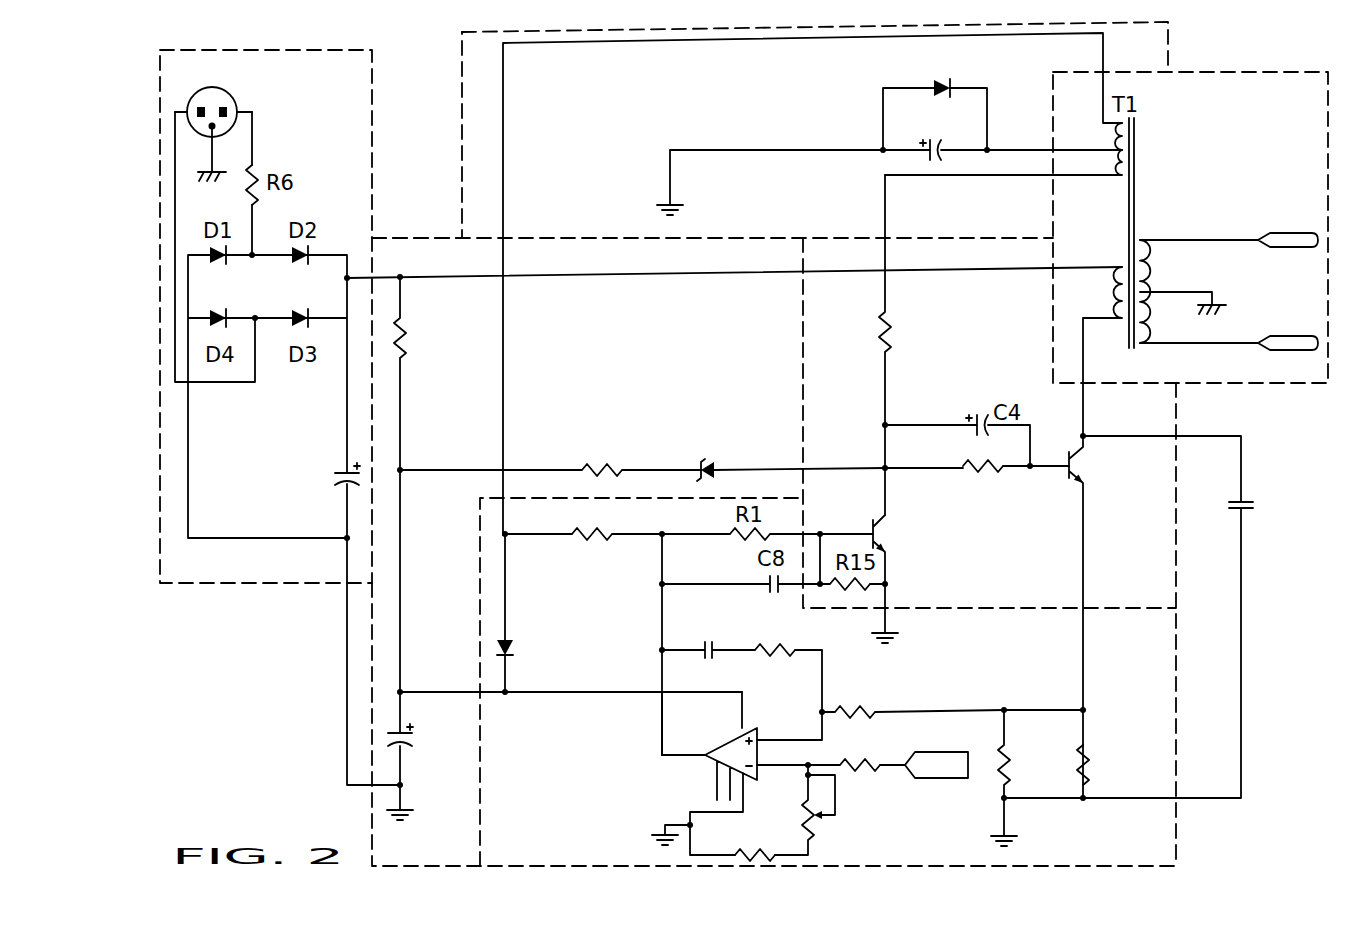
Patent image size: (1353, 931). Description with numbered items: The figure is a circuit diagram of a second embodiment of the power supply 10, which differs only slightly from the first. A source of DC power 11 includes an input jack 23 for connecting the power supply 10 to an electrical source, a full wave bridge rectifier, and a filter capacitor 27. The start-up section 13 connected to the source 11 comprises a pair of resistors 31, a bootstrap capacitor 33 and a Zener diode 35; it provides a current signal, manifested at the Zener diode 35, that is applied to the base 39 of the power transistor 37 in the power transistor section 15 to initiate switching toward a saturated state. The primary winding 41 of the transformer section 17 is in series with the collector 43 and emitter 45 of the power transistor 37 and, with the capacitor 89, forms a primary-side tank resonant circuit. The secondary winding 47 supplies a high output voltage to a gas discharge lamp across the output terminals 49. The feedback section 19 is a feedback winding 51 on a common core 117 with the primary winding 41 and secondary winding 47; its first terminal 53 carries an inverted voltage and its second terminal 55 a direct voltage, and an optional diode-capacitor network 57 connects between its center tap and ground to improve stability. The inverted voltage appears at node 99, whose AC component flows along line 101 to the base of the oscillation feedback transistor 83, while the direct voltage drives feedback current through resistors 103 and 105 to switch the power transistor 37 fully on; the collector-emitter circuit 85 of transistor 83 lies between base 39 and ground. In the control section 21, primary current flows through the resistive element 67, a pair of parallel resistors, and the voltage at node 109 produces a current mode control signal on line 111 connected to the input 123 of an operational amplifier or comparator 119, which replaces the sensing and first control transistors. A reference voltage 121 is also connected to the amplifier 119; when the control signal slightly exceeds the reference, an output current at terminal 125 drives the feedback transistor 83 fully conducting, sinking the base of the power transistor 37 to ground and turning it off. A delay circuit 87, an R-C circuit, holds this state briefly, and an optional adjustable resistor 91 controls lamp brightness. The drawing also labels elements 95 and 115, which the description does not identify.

The power supply 10 is at (428, 150).
The source of DC power 11 is at (373, 100).
The start-up section 13 is at (530, 237).
The power transistor section 15 is at (1177, 411).
The transformer section 17 is at (1325, 145).
The feedback section 19 is at (461, 173).
The control section 21 is at (1025, 610).
The input jack 23 is at (233, 94).
The filter capacitor 27 is at (342, 478).
The pair of resistors 31 is at (583, 468).
The bootstrap capacitor 33 is at (415, 747).
The Zener diode 35 is at (700, 462).
The power transistor 37 is at (1118, 468).
The base of power transistor 39 is at (1052, 468).
The primary winding 41 is at (1115, 280).
The collector of power transistor 43 is at (1085, 405).
The emitter of power transistor 45 is at (1084, 552).
The secondary winding 47 is at (1143, 240).
The output terminals 49 is at (1262, 345).
The feedback winding 51 is at (1138, 138).
The first terminal of feedback winding 53 is at (1103, 35).
The second terminal of feedback winding 55 is at (1118, 180).
The diode-capacitor network 57 is at (880, 127).
The resistive element 67 is at (1078, 745).
The oscillation feedback transistor 83 is at (868, 513).
The collector-emitter circuit of feedback transistor 85 is at (893, 513).
The delay circuit 87 is at (733, 656).
The capacitor 89 is at (1239, 514).
The adjustable resistor 91 is at (817, 835).
The node 95 is at (400, 443).
The node 99 is at (503, 537).
The line 101 is at (518, 537).
The resistor 103 is at (892, 338).
The resistor 105 is at (965, 461).
The node 109 is at (1008, 706).
The line 111 is at (905, 710).
The diode D7 115 is at (538, 695).
The common core 117 is at (1132, 183).
The operational amplifier or comparator 119 is at (710, 760).
The reference voltage 121 is at (935, 782).
The input of amplifier 123 is at (762, 742).
The terminal of amplifier 125 is at (665, 720).